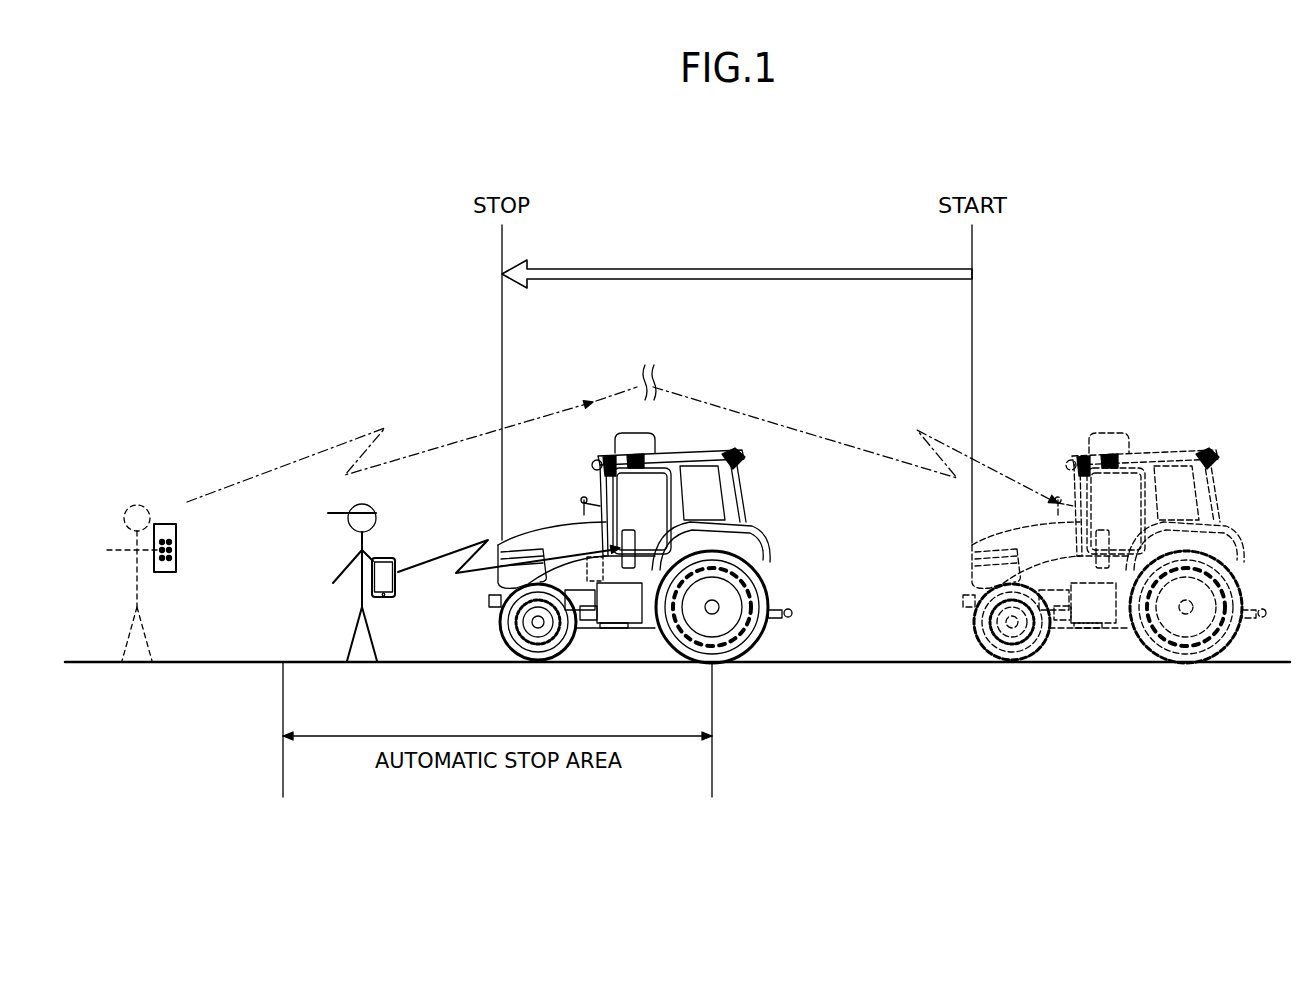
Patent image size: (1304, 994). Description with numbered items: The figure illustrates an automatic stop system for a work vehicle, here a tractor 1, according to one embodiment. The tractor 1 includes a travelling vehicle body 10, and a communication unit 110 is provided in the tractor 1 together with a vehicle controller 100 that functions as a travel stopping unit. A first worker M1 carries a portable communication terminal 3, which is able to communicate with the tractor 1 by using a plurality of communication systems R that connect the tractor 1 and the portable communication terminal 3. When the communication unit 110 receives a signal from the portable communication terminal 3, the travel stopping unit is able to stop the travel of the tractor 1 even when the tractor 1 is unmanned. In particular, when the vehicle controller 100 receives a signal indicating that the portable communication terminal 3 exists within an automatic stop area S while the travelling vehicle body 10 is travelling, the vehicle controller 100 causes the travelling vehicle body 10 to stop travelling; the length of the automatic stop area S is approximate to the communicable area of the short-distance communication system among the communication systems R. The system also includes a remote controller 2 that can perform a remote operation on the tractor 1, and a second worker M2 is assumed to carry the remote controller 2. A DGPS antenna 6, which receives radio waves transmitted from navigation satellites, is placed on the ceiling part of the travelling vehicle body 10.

The tractor 1 is at (877, 540).
The remote controller 2 is at (167, 573).
The portable communication terminal 3 is at (388, 598).
The DGPS antenna 6 is at (655, 449).
The travelling vehicle body 10 is at (540, 525).
The vehicle controller 100 is at (590, 556).
The communication unit 110 is at (623, 529).
The first worker M1 is at (314, 537).
The second worker M2 is at (137, 500).
The communication systems R is at (448, 545).
The automatic stop area S is at (337, 737).